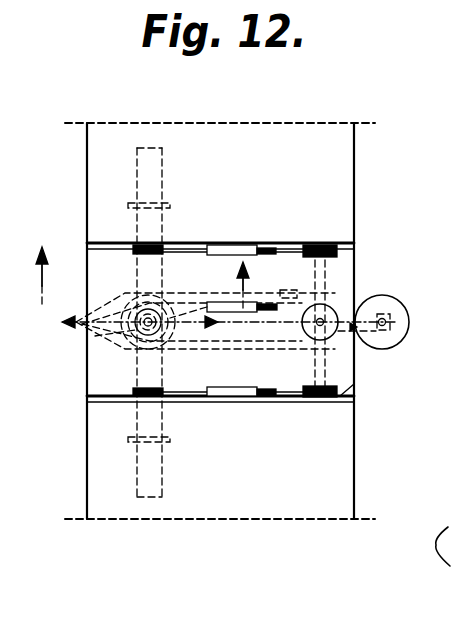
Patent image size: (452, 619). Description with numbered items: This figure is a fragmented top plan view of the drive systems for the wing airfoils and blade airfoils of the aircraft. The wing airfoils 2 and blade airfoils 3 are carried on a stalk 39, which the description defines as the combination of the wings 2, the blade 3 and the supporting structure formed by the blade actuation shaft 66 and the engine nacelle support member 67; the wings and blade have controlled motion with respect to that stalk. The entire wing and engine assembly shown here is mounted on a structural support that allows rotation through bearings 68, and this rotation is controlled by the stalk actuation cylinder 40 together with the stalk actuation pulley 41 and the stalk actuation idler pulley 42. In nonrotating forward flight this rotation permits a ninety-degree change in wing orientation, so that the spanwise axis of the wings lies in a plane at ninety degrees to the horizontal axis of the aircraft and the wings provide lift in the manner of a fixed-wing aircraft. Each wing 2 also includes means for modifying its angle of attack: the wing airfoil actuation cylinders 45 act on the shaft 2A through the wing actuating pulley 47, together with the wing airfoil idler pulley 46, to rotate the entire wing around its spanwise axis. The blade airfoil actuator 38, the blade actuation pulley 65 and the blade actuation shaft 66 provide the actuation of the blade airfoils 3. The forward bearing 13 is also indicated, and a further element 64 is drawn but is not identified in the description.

The wing airfoils 2 is at (86, 198).
The shaft 2A is at (150, 172).
The blade airfoils 3 is at (82, 323).
The forward bearing 13 is at (61, 323).
The blade airfoil actuator 38 is at (211, 301).
The stalk 39 is at (424, 546).
The stalk actuation cylinder 40 is at (288, 290).
The stalk actuation pulley 41 is at (131, 292).
The stalk actuation idler pulley 42 is at (391, 306).
The wing airfoil actuation cylinder 45 is at (233, 246).
The wing airfoil idler pulley 46 is at (322, 244).
The wing actuating pulley 47 is at (140, 244).
The pulley 64 is at (333, 320).
The blade actuation pulley 65 is at (162, 303).
The blade actuation shaft 66 is at (163, 341).
The engine nacelle support member 67 is at (138, 350).
The bearing 68 is at (104, 337).